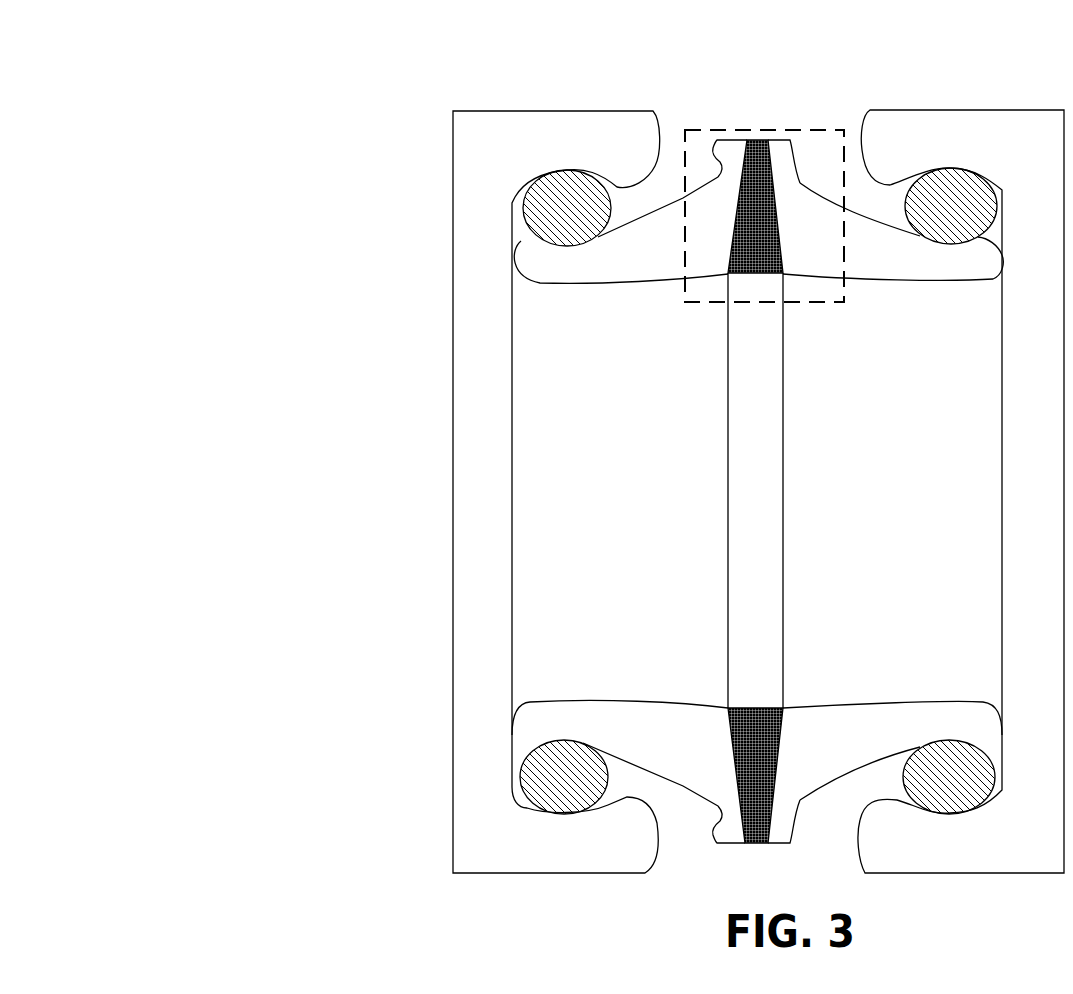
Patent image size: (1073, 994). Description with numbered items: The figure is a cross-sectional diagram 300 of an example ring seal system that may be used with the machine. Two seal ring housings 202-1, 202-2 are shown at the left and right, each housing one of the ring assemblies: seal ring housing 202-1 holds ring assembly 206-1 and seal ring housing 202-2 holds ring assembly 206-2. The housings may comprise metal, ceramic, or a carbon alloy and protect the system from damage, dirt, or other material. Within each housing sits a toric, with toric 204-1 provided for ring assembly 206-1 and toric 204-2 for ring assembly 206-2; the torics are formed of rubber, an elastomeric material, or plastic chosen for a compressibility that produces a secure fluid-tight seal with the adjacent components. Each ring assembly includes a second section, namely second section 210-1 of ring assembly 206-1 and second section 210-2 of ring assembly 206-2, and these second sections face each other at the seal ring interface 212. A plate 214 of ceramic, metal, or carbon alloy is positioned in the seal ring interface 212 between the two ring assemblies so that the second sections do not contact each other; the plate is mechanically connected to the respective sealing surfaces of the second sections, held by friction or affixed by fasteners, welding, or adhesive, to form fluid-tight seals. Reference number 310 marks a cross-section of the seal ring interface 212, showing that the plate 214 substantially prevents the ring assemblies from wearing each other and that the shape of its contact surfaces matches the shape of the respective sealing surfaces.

The cross-sectional diagram 300 is at (277, 53).
The seal ring housing 202-1 is at (465, 295).
The seal ring housing 202-2 is at (1025, 112).
The toric 204-1 is at (573, 187).
The toric 204-2 is at (936, 188).
The ring assembly 206-1 is at (652, 303).
The ring assembly 206-2 is at (870, 303).
The second section 210-1 is at (732, 167).
The second section 210-2 is at (790, 147).
The seal ring interface 212 is at (753, 126).
The plate 214 is at (770, 246).
The cross-section of seal ring interface 310 is at (843, 130).